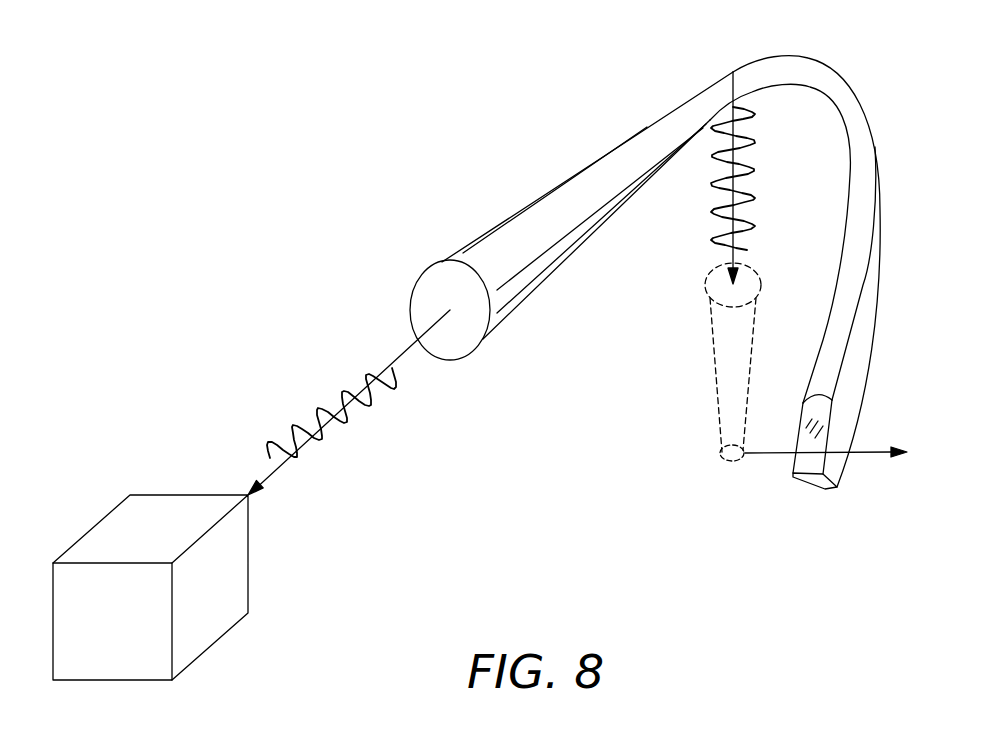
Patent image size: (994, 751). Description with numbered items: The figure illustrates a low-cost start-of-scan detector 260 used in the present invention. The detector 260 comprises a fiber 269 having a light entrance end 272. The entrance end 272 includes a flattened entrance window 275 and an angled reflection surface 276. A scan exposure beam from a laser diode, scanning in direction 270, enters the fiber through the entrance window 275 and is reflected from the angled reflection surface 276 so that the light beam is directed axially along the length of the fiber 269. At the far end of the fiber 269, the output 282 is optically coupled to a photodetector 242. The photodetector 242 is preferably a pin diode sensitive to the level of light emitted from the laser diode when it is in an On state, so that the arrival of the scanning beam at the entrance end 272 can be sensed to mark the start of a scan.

The photodetector 242 is at (155, 507).
The detector 260 is at (645, 258).
The fiber 269 is at (488, 230).
The scanning direction 270 is at (855, 457).
The light entrance end 272 is at (858, 497).
The entrance window 275 is at (823, 400).
The angled reflection surface 276 is at (807, 487).
The output 282 is at (300, 408).